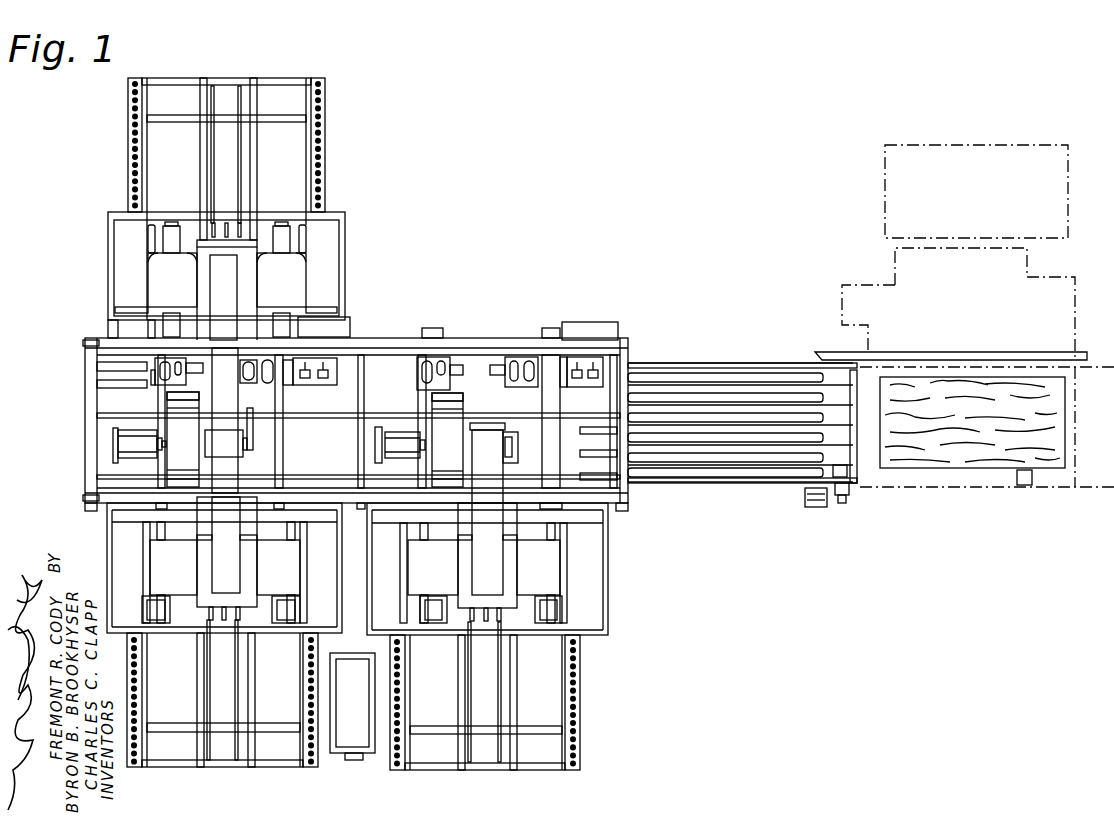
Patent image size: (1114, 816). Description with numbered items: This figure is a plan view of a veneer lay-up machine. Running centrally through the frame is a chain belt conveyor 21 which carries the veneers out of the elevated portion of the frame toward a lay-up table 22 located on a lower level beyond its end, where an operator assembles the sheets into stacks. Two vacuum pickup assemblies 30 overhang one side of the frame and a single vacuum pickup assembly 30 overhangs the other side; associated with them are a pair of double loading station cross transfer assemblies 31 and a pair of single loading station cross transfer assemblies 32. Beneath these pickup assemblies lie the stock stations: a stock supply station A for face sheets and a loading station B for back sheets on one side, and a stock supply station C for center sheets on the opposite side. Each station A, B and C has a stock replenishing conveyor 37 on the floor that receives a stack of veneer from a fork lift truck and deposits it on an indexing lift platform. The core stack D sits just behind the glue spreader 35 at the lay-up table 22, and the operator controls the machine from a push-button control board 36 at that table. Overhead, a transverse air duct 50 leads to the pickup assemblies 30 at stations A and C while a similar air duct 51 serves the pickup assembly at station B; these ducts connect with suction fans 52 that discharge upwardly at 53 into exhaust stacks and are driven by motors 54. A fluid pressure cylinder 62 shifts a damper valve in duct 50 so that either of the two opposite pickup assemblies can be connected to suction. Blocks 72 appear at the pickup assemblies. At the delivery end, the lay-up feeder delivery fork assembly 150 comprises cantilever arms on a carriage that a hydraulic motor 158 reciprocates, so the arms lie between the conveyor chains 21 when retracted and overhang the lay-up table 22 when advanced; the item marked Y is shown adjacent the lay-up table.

The chain belt conveyor 21 is at (664, 456).
The lay-up table 22 is at (963, 488).
The vacuum pickup assembly 30 is at (345, 252).
The double loading station cross transfer assembly 31 is at (171, 226).
The single loading station cross transfer assembly 32 is at (172, 612).
The glue spreader 35 is at (1022, 268).
The control board 36 is at (816, 508).
The stock replenishing conveyor 37 is at (330, 770).
The transverse air duct 50 is at (214, 396).
The air duct 51 is at (215, 306).
The suction fan 52 is at (175, 442).
The fan discharge 53 is at (170, 396).
The motor 54 is at (127, 442).
The fluid pressure cylinder 62 is at (255, 428).
The bearing blocks 72 is at (170, 279).
The lay-up feeder delivery fork assembly 150 is at (726, 468).
The hydraulic motor 158 is at (845, 500).
The stock supply station for face sheets A is at (255, 620).
The stock station for veneer back sheets B is at (518, 622).
The stock supply station for center sheets C is at (191, 215).
The core stack D is at (1052, 189).
The log Y is at (946, 462).